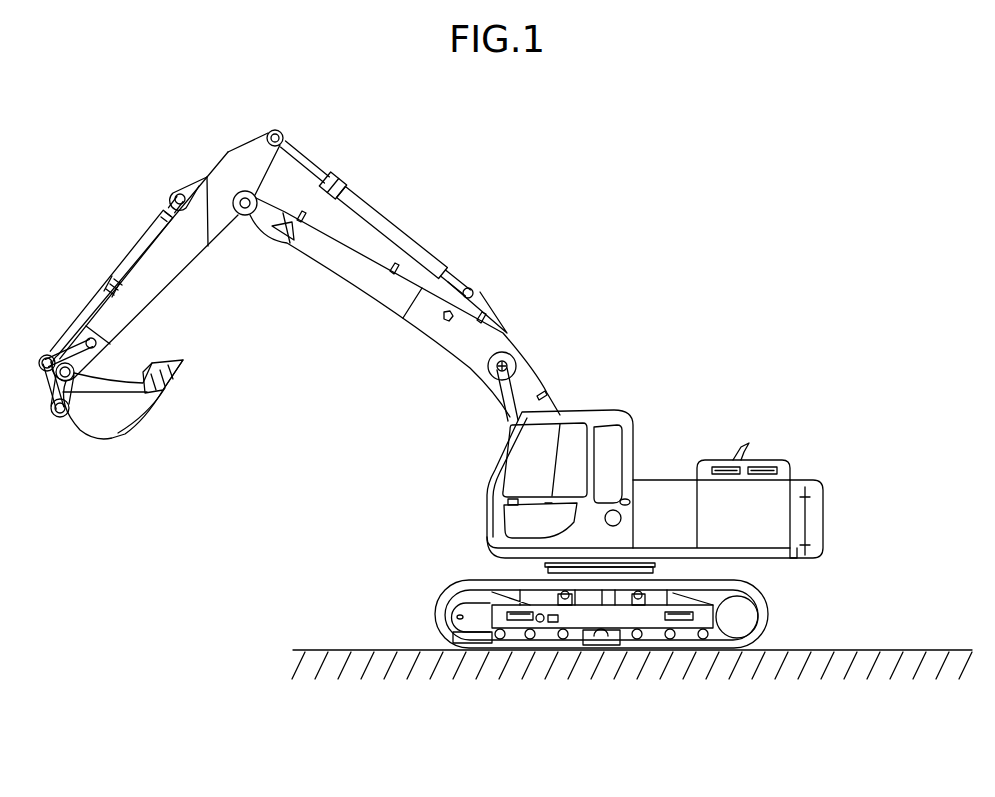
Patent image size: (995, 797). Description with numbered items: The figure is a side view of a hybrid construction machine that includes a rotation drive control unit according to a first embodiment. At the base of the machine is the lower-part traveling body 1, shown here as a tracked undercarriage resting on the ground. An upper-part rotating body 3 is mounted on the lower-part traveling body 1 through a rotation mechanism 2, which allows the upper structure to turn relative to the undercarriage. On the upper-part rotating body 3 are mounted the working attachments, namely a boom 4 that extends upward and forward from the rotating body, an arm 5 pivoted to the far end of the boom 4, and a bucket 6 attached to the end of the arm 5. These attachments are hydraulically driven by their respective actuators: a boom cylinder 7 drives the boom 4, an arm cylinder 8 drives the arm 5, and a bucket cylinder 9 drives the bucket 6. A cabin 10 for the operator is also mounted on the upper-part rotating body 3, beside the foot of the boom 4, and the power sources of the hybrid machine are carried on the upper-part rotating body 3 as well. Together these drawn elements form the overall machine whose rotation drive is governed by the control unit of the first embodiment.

The lower-part traveling body 1 is at (437, 622).
The rotation mechanism 2 is at (657, 572).
The upper-part rotating body 3 is at (668, 478).
The boom 4 is at (430, 330).
The arm 5 is at (183, 262).
The bucket 6 is at (108, 440).
The boom cylinder 7 is at (510, 398).
The arm cylinder 8 is at (420, 248).
The bucket cylinder 9 is at (137, 250).
The cabin 10 is at (613, 410).